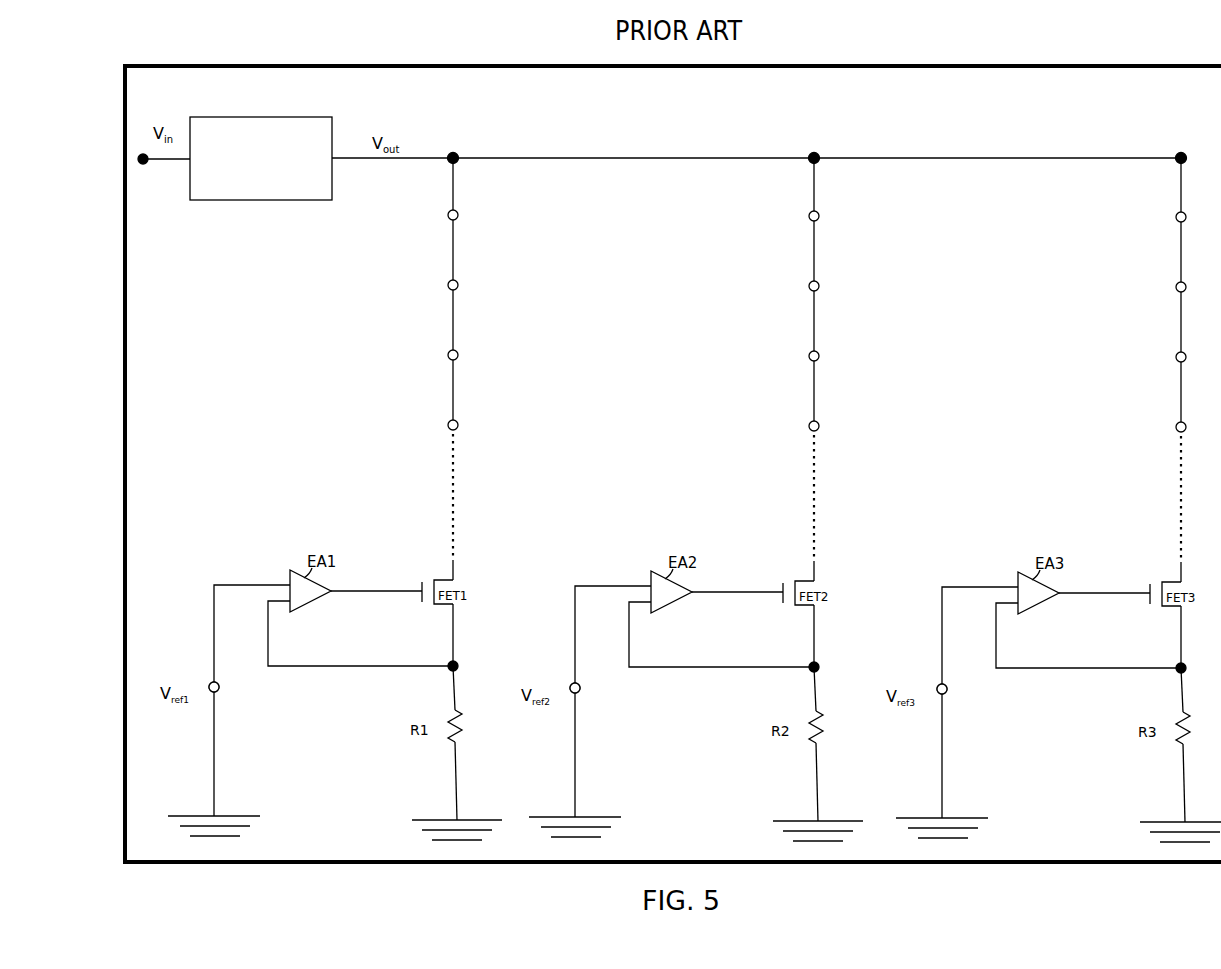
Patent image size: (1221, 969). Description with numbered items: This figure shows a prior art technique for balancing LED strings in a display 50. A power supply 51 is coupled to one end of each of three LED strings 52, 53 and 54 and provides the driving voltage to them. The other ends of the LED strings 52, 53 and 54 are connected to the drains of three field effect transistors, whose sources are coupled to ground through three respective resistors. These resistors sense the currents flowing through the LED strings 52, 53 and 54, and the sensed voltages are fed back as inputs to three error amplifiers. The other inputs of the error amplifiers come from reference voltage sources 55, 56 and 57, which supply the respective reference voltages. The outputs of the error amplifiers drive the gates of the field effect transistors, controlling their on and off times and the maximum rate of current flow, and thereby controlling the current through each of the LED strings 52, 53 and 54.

The display 50 is at (673, 464).
The power supply 51 is at (261, 158).
The LED string 52 is at (456, 154).
The LED string 53 is at (817, 154).
The LED string 54 is at (1184, 154).
The reference voltage source 55 is at (219, 686).
The reference voltage source 56 is at (580, 687).
The reference voltage source 57 is at (947, 688).